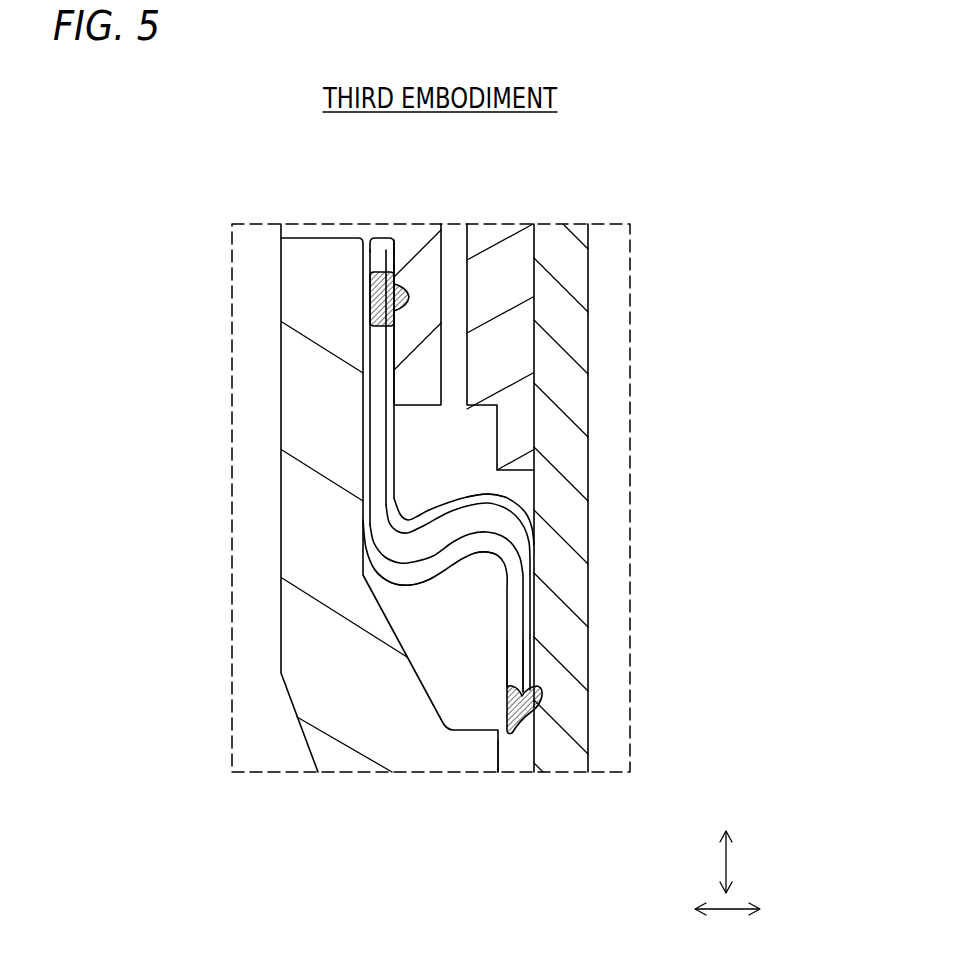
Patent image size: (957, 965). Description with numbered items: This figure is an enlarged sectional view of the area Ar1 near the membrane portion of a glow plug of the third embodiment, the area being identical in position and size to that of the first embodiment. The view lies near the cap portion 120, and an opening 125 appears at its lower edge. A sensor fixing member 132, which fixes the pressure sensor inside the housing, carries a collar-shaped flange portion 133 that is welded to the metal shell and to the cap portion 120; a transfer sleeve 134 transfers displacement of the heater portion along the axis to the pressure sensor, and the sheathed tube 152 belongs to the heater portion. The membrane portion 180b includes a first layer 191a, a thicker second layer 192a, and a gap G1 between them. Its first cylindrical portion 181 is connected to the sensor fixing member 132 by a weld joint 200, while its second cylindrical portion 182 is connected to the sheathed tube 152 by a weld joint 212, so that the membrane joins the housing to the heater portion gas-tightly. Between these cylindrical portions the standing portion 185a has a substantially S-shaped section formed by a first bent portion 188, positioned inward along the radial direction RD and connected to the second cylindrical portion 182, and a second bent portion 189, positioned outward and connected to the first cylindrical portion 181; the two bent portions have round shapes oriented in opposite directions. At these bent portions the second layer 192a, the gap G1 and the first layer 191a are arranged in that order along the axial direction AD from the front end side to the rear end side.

The cap portion 120 is at (305, 741).
The opening 125 is at (510, 778).
The sensor fixing member 132 is at (427, 253).
The flange portion 133 is at (298, 230).
The transfer sleeve 134 is at (510, 340).
The sheathed tube 152 is at (565, 428).
The membrane portion 180b is at (307, 465).
The first cylindrical portion 181 is at (366, 444).
The second cylindrical portion 182 is at (524, 664).
The standing portion 185a is at (436, 619).
The first bent portion 188 is at (482, 573).
The second bent portion 189 is at (418, 592).
The first layer 191a is at (387, 387).
The second layer 192a is at (377, 410).
The weld joint 200 is at (367, 293).
The weld joint 212 is at (533, 708).
The area Ar1 is at (630, 264).
The gap G1 is at (492, 523).
The axial direction AD is at (741, 862).
The radial direction RD is at (727, 923).